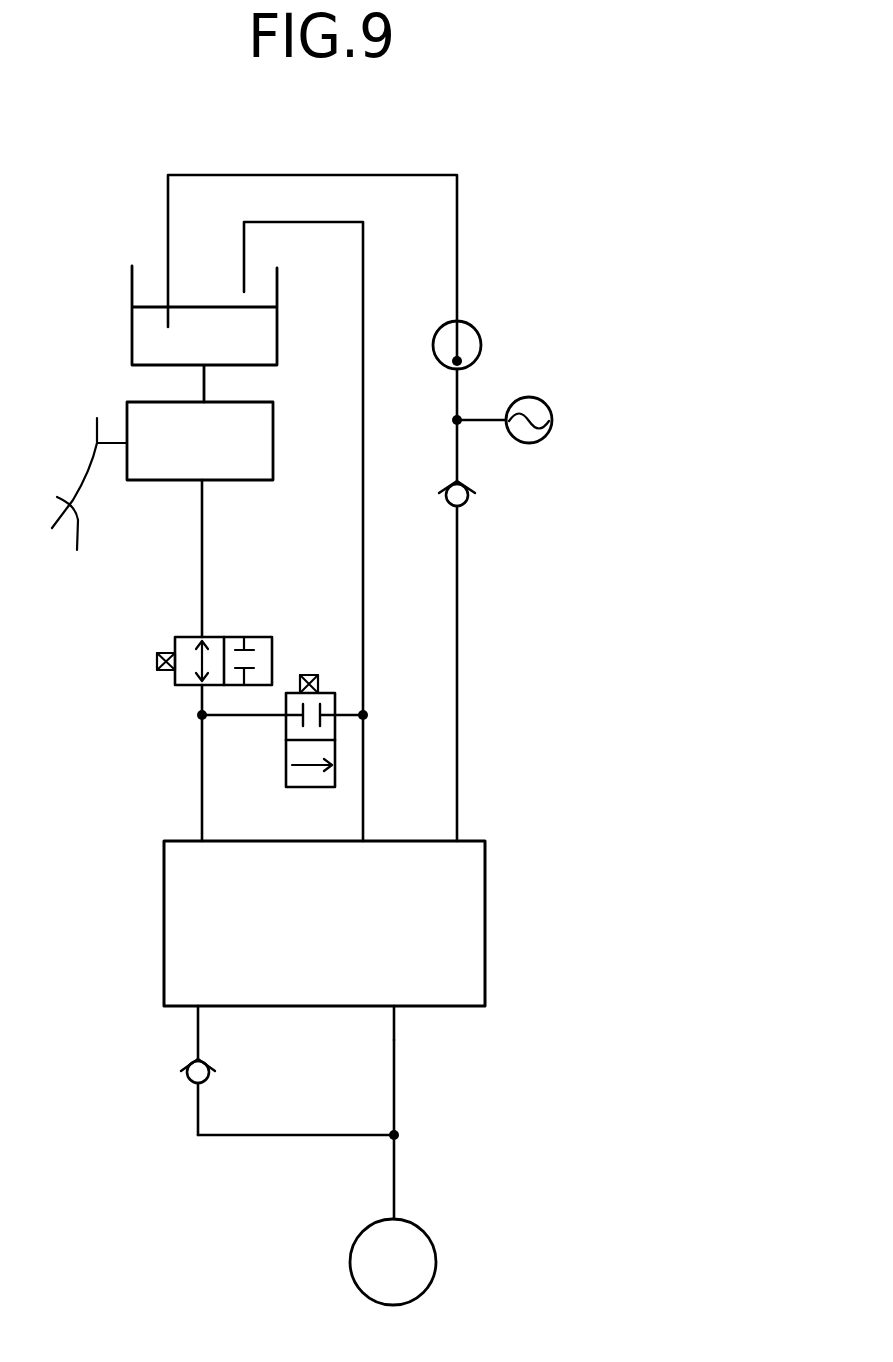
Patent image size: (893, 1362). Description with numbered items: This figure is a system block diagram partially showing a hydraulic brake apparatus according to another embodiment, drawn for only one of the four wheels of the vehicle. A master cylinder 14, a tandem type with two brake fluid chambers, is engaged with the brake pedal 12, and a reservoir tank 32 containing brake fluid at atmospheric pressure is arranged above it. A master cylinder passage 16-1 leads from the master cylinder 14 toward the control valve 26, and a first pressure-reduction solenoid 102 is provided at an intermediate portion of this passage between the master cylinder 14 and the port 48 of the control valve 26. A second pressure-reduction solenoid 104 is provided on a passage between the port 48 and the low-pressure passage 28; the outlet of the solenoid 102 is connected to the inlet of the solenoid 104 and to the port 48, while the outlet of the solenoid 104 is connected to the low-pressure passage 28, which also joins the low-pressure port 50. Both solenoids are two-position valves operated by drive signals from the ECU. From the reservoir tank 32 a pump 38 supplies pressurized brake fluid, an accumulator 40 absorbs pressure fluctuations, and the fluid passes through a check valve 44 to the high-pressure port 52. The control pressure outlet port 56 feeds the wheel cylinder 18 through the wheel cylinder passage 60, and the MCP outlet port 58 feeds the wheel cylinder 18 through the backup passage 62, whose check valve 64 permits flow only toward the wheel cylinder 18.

The brake pedal 12 is at (89, 504).
The master cylinder 14 is at (273, 437).
The master cylinder passage 16-1 is at (202, 513).
The wheel cylinder 18 is at (415, 1257).
The control valve 26 is at (455, 950).
The low-pressure passage 28 is at (363, 593).
The reservoir tank 32 is at (128, 327).
The pump 38 is at (475, 327).
The accumulator 40 is at (522, 442).
The check valve 44 is at (462, 505).
The port 48 is at (198, 840).
The low-pressure port 50 is at (362, 840).
The high-pressure port 52 is at (457, 841).
The control pressure outlet port 56 is at (394, 1008).
The MCP outlet port 58 is at (198, 1008).
The wheel cylinder passage 60 is at (394, 1072).
The backup passage 62 is at (253, 1135).
The check valve 64 is at (190, 1080).
The first pressure-reduction solenoid 102 is at (157, 660).
The second pressure-reduction solenoid 104 is at (335, 731).